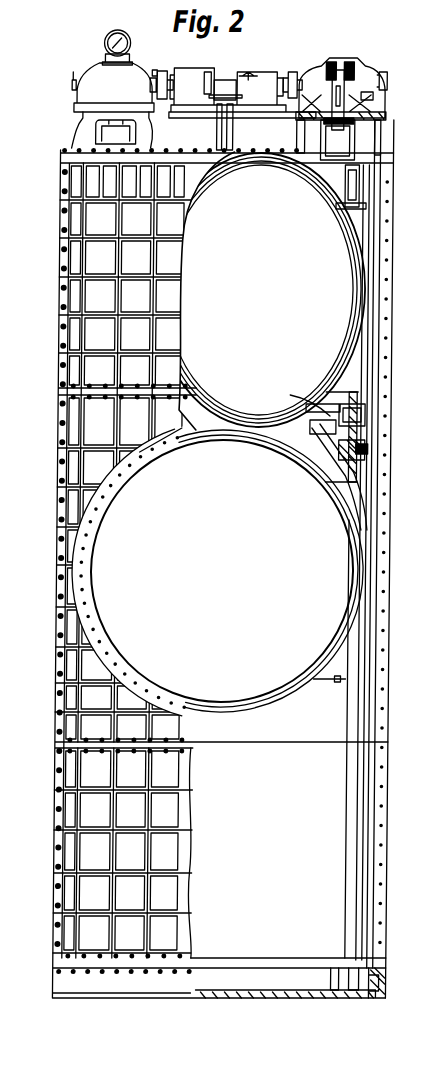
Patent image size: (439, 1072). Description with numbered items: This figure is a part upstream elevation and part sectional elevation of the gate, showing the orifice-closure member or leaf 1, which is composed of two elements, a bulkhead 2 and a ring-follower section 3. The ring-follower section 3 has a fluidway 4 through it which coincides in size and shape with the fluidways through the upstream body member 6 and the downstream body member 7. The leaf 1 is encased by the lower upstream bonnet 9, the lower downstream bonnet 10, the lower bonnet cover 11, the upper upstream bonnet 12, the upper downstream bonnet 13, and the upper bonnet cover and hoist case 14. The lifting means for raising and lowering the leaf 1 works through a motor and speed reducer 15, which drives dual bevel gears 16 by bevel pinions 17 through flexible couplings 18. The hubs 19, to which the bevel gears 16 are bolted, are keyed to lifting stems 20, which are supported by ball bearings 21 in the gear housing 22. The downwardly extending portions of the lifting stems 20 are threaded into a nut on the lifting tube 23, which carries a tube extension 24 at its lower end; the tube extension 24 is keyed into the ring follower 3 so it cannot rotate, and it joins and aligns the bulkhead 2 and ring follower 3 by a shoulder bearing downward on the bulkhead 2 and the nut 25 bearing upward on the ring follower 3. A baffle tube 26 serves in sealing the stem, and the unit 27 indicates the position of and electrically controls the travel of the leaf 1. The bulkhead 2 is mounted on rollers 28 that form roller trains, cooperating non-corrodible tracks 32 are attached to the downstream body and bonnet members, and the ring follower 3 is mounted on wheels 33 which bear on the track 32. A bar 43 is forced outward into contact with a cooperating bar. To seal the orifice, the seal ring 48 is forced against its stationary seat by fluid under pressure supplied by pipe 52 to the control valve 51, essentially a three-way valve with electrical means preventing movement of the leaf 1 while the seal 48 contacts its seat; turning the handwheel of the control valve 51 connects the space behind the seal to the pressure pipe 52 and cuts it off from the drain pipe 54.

The orifice-closure member or leaf 1 is at (291, 465).
The bulkhead 2 is at (248, 320).
The ring-follower section 3 is at (333, 658).
The fluidway 4 is at (288, 556).
The upstream body member 6 is at (80, 573).
The downstream body member 7 is at (387, 740).
The lower upstream bonnet 9 is at (90, 815).
The lower downstream bonnet 10 is at (382, 835).
The lower bonnet cover 11 is at (385, 983).
The upper upstream bonnet 12 is at (95, 297).
The upper downstream bonnet 13 is at (388, 283).
The upper bonnet cover and hoist case 14 is at (72, 138).
The motor and speed reducer 15 is at (200, 68).
The bevel gears 16 is at (372, 97).
The bevel pinions 17 is at (320, 63).
The flexible couplings 18 is at (170, 68).
The hubs 19 is at (377, 107).
The lifting stems 20 is at (367, 133).
The ball bearings 21 is at (368, 72).
The gear housing 22 is at (90, 68).
The lifting tube 23 is at (307, 403).
The tube extension 24 is at (315, 470).
The nut 25 is at (337, 492).
The baffle tube 26 is at (357, 200).
The unit 27 is at (108, 0).
The rollers 28 is at (380, 147).
The non-corrodible tracks 32 is at (357, 733).
The wheels 33 is at (363, 447).
The bar 43 is at (360, 303).
The seal ring 48 is at (308, 192).
The control valve 51 is at (230, 77).
The pressure pipe 52 is at (220, 133).
The drain pipe 54 is at (240, 127).